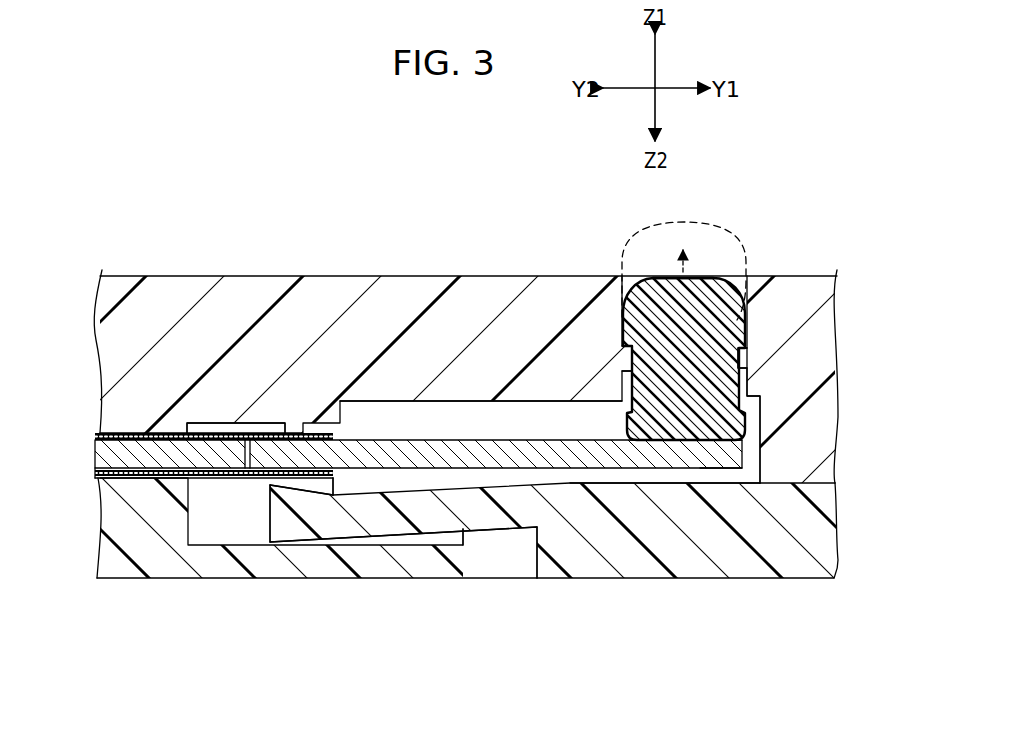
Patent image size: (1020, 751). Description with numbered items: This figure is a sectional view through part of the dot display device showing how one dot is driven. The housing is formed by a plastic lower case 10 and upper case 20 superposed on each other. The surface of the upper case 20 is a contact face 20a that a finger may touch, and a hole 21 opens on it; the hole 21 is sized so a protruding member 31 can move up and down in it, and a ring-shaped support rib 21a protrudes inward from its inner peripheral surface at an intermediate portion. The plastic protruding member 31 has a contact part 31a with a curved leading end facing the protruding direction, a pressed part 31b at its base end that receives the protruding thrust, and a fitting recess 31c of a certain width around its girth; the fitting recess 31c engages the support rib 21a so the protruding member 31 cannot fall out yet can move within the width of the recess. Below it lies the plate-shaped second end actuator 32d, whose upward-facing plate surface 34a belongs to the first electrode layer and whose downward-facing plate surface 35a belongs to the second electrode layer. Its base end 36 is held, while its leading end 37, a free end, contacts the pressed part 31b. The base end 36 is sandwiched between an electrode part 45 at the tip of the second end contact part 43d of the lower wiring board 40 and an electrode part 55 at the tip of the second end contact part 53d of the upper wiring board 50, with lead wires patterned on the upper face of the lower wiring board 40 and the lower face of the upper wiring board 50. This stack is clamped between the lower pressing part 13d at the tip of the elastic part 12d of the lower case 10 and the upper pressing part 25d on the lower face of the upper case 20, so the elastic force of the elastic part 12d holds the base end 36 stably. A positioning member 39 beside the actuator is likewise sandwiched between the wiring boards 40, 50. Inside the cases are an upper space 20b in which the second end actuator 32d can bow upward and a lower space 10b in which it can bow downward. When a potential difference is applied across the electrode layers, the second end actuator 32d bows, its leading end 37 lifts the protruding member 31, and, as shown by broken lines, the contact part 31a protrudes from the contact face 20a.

The lower case 10 is at (617, 583).
The lower space 10b is at (647, 484).
The elastic part 12d is at (403, 514).
The lower pressing part 13d is at (293, 494).
The upper case 20 is at (446, 273).
The contact face 20a is at (201, 276).
The upper space 20b is at (423, 402).
The hole 21 is at (629, 277).
The support rib 21a is at (622, 357).
The upper pressing part 25d is at (300, 426).
The protruding member 31 is at (730, 272).
The contact part 31a is at (703, 276).
The pressed part 31b is at (693, 444).
The fitting recess 31c is at (750, 390).
The second end actuator 32d is at (552, 579).
The plate surface 34a is at (481, 432).
The plate surface 35a is at (520, 484).
The base end 36 is at (257, 478).
The leading end 37 is at (733, 473).
The positioning member 39 is at (112, 457).
The lower wiring board 40 is at (98, 485).
The second end contact part 43d is at (210, 476).
The electrode part 45 is at (341, 488).
The upper wiring board 50 is at (398, 427).
The second end contact part 53d is at (210, 433).
The electrode part 55 is at (334, 437).